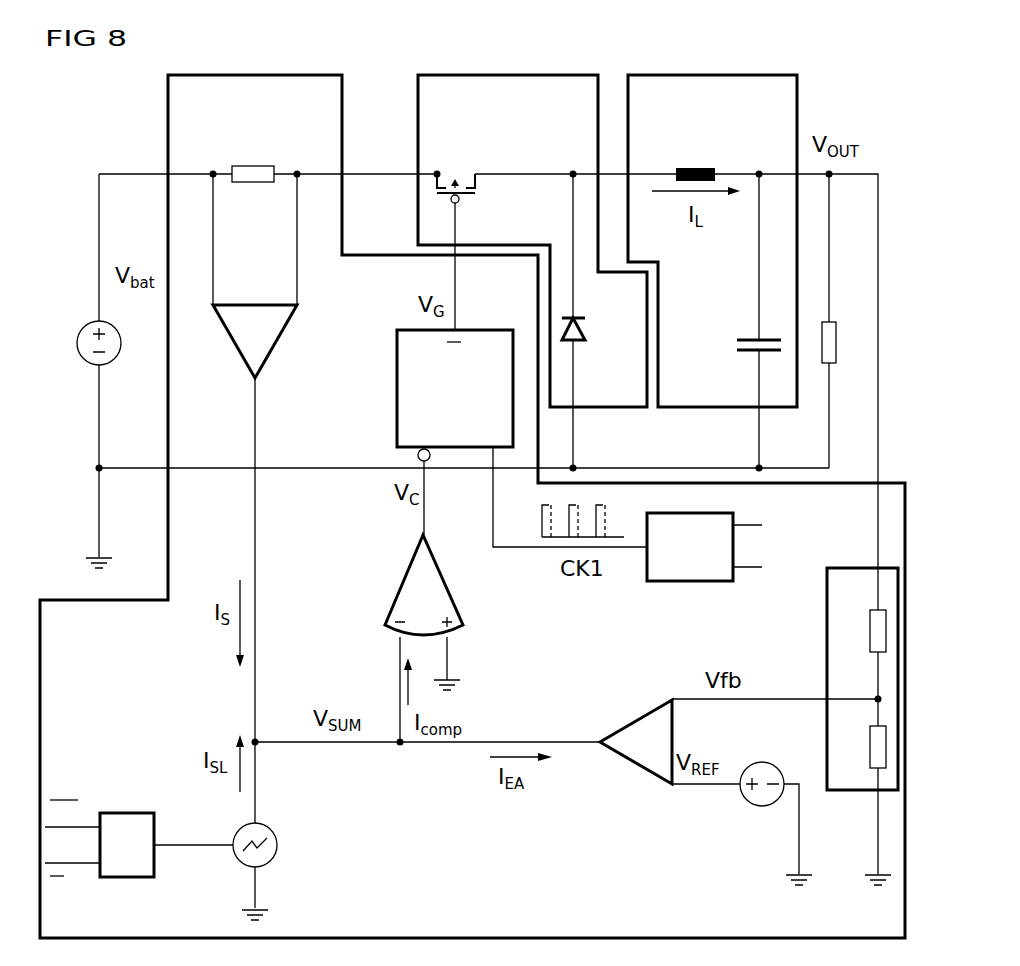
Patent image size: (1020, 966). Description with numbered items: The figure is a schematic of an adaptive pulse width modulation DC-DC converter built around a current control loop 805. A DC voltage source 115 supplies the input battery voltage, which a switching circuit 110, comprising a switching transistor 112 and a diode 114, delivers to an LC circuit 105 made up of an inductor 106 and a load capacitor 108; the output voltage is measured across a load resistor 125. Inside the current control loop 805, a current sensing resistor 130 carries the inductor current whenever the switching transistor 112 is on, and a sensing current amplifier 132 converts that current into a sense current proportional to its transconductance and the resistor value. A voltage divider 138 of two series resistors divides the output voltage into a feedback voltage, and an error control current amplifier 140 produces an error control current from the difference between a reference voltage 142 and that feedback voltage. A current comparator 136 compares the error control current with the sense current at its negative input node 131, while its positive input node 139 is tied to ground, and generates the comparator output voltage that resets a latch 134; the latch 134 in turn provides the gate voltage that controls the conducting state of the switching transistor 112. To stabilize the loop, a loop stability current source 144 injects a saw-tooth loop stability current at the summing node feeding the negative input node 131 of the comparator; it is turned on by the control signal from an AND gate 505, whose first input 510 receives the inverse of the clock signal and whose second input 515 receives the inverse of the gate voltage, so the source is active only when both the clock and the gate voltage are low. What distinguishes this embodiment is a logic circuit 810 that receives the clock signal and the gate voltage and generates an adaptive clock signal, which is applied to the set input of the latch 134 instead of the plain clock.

The current control loop 805 is at (256, 75).
The switching circuit 110 is at (505, 75).
The LC circuit 105 is at (716, 75).
The current sensing resistor 130 is at (258, 166).
The sensing current amplifier 132 is at (290, 332).
The latch 134 is at (397, 395).
The current comparator 136 is at (446, 584).
The switching transistor 112 is at (466, 198).
The diode 114 is at (578, 345).
The inductor 106 is at (712, 168).
The load capacitor 108 is at (738, 345).
The load resistor 125 is at (832, 364).
The DC voltage source 115 is at (82, 366).
The comparator inverting input node 131 is at (394, 672).
The positive input node 139 is at (448, 655).
The error control current amplifier 140 is at (640, 712).
The reference voltage 142 is at (756, 806).
The voltage divider 138 is at (827, 622).
The logic circuit 810 is at (688, 582).
The loop stability current source 144 is at (280, 840).
The AND gate 505 is at (146, 813).
The first input 510 is at (96, 818).
The second input 515 is at (96, 872).